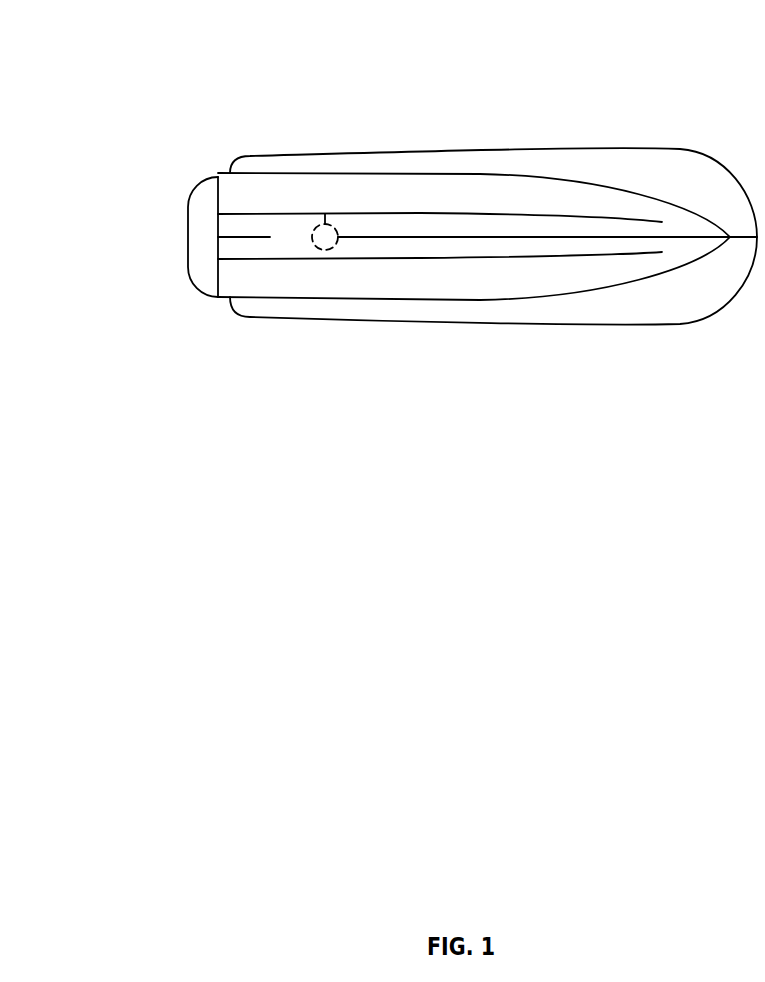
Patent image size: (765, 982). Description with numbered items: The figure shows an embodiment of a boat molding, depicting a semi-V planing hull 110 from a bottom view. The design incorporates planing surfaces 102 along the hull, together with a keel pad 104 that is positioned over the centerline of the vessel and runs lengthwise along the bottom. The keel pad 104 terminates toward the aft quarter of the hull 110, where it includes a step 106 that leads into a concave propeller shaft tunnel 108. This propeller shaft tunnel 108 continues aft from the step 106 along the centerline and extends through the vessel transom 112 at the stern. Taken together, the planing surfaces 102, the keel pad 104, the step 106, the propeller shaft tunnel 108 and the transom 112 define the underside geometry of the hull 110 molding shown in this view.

The planing surfaces 102 is at (425, 258).
The keel pad 104 is at (290, 224).
The step 106 is at (333, 252).
The concave propeller shaft tunnel 108 is at (270, 238).
The semi-V planing hull 110 is at (743, 202).
The vessel transom 112 is at (213, 203).